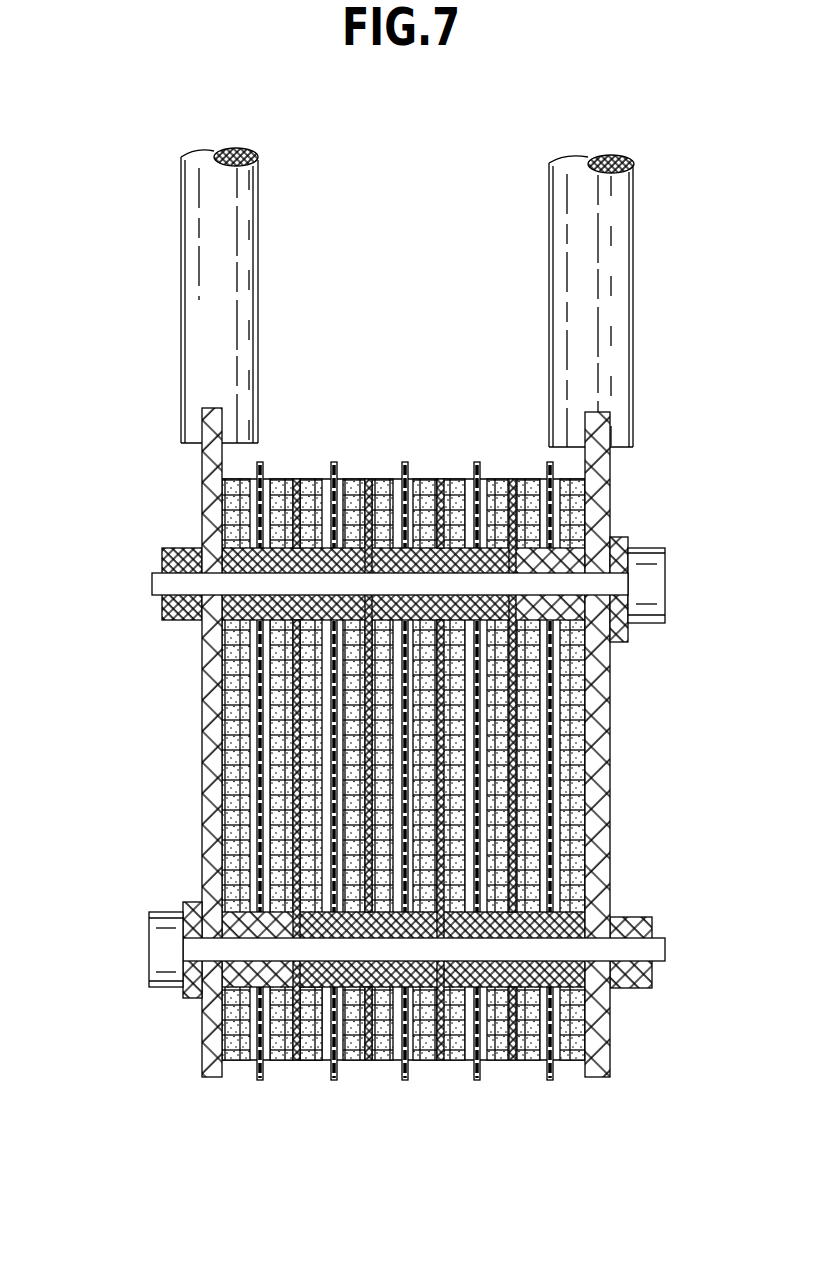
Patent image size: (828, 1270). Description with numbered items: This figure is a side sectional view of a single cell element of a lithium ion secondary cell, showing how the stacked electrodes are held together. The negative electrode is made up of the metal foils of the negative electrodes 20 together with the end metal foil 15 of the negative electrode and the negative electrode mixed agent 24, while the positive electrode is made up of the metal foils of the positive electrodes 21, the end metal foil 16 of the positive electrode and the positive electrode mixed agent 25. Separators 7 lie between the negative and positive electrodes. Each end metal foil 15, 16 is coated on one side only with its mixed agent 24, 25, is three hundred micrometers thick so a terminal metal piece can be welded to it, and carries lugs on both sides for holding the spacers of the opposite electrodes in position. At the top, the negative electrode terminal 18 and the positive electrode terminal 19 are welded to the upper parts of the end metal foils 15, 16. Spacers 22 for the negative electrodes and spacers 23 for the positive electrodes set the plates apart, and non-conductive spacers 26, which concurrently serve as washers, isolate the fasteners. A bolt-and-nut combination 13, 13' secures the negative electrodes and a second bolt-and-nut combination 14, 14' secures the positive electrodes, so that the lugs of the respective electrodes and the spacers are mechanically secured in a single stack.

The separator 7 is at (548, 843).
The bolt for securing the negative electrodes 13 is at (351, 591).
The nut for securing the negative electrodes 13' is at (331, 550).
The bolt for securing the positive electrodes 14 is at (370, 949).
The nut for securing the positive electrodes 14' is at (657, 993).
The end metal foil of the negative electrode 15 is at (210, 468).
The end metal foil of the positive electrode 16 is at (602, 488).
The negative electrode terminal 18 is at (236, 257).
The positive electrode terminal 19 is at (612, 256).
The metal foils of the negative electrodes 20 is at (368, 480).
The metal foils of the positive electrodes 21 is at (297, 480).
The spacers for the negative electrodes 22 is at (310, 537).
The spacers for the positive electrodes 23 is at (315, 988).
The mixed agent for the negative electrode 24 is at (232, 718).
The mixed agent for the positive electrode 25 is at (282, 832).
The non-conductive spacers 26 is at (605, 608).